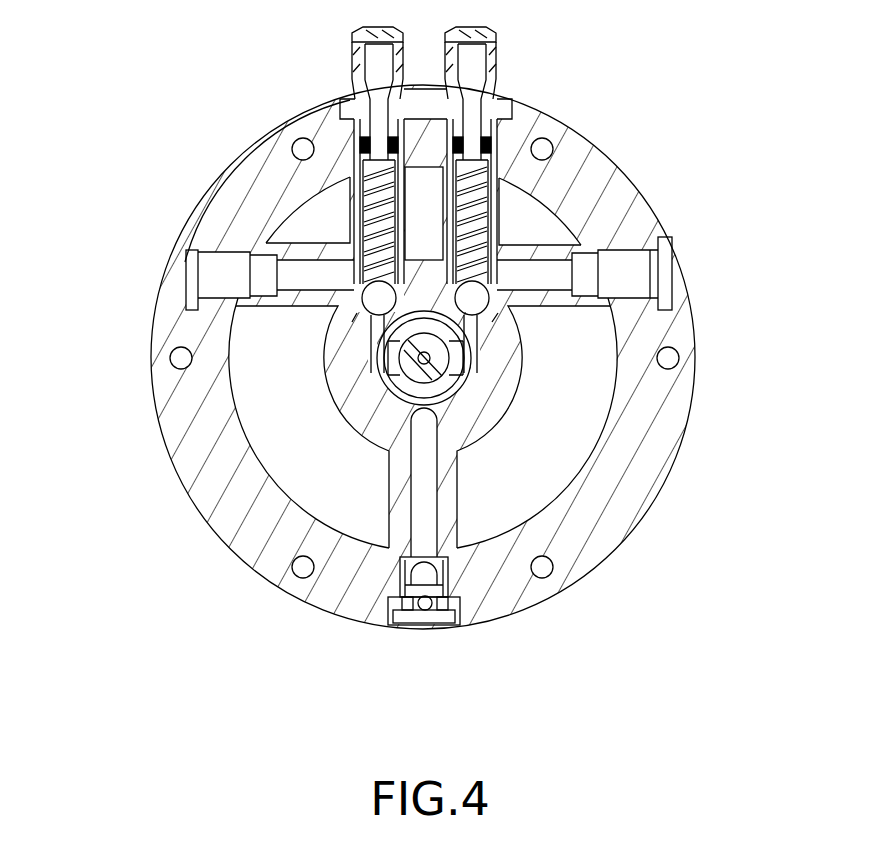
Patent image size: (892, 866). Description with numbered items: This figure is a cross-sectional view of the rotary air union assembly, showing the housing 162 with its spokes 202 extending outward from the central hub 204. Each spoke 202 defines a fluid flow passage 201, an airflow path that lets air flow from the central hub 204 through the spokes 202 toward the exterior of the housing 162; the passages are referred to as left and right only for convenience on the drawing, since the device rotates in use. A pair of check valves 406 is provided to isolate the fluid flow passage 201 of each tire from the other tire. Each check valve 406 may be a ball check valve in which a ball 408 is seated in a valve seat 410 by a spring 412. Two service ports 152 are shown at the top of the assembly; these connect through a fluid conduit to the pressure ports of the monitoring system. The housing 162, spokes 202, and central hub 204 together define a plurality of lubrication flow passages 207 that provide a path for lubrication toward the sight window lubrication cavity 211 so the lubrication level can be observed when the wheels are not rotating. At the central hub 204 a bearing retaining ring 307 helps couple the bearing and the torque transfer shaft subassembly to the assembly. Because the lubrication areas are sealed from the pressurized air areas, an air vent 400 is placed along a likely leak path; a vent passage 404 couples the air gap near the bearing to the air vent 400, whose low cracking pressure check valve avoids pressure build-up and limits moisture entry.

The service port 152 is at (348, 100).
The check valve 406 is at (507, 157).
The spring 412 is at (368, 215).
The housing 162 is at (617, 210).
The ball 408 is at (277, 282).
The fluid flow passage 201 is at (186, 288).
The spoke 202 is at (232, 340).
The valve seat 410 is at (352, 322).
The bearing retaining ring 307 is at (375, 378).
The central hub 204 is at (505, 400).
The vent passage 404 is at (415, 480).
The sight window lubrication cavity 211 is at (298, 573).
The air vent 400 is at (431, 628).
The lubrication flow passage 207 is at (533, 481).